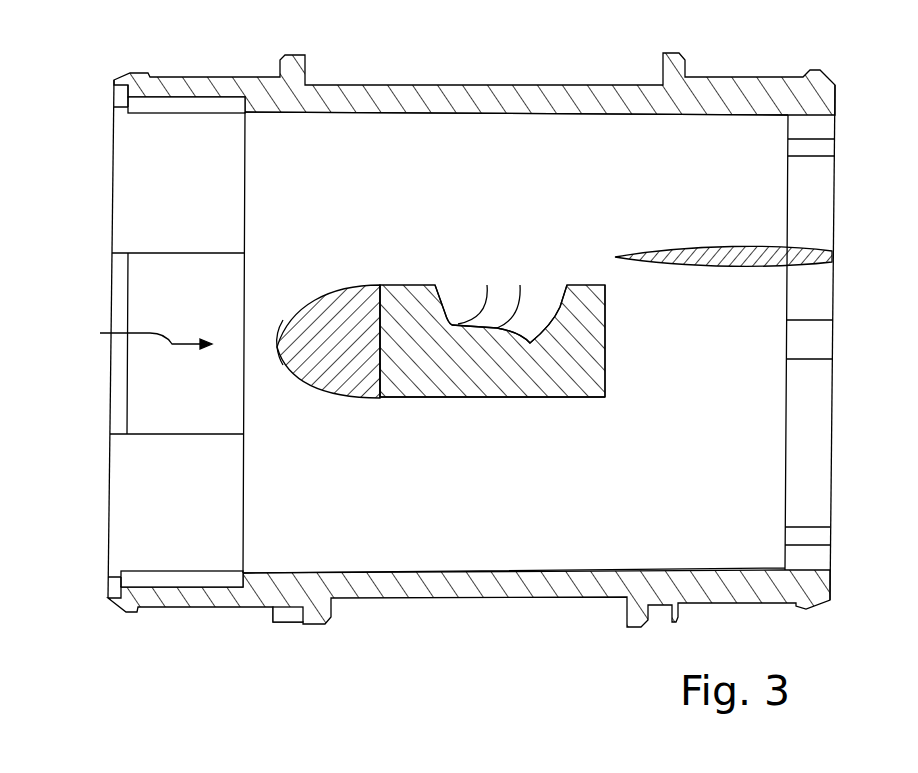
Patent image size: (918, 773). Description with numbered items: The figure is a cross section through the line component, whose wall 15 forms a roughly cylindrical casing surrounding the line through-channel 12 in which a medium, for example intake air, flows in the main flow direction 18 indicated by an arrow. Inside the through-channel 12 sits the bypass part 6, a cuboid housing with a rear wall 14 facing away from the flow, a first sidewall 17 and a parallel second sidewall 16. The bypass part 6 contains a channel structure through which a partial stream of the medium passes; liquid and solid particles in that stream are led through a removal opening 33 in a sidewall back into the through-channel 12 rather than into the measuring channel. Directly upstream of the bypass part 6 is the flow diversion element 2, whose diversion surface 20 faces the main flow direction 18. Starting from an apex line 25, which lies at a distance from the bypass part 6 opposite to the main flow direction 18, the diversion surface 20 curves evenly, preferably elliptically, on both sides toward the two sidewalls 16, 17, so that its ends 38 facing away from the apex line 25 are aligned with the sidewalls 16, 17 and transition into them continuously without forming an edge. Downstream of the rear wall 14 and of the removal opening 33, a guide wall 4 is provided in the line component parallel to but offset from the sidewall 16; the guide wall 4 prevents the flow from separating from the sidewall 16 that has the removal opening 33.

The flow diversion element 2 is at (450, 337).
The guide wall 4 is at (708, 247).
The bypass part 6 is at (514, 337).
The line through-channel 12 is at (496, 535).
The rear wall 14 is at (605, 378).
The wall 15 is at (345, 85).
The second sidewall 16 is at (497, 268).
The first sidewall 17 is at (463, 397).
The main flow direction 18 is at (125, 330).
The diversion surface 20 is at (315, 359).
The apex line 25 is at (277, 340).
The removal opening 33 is at (498, 282).
The ends of diversion surface 38 is at (372, 284).